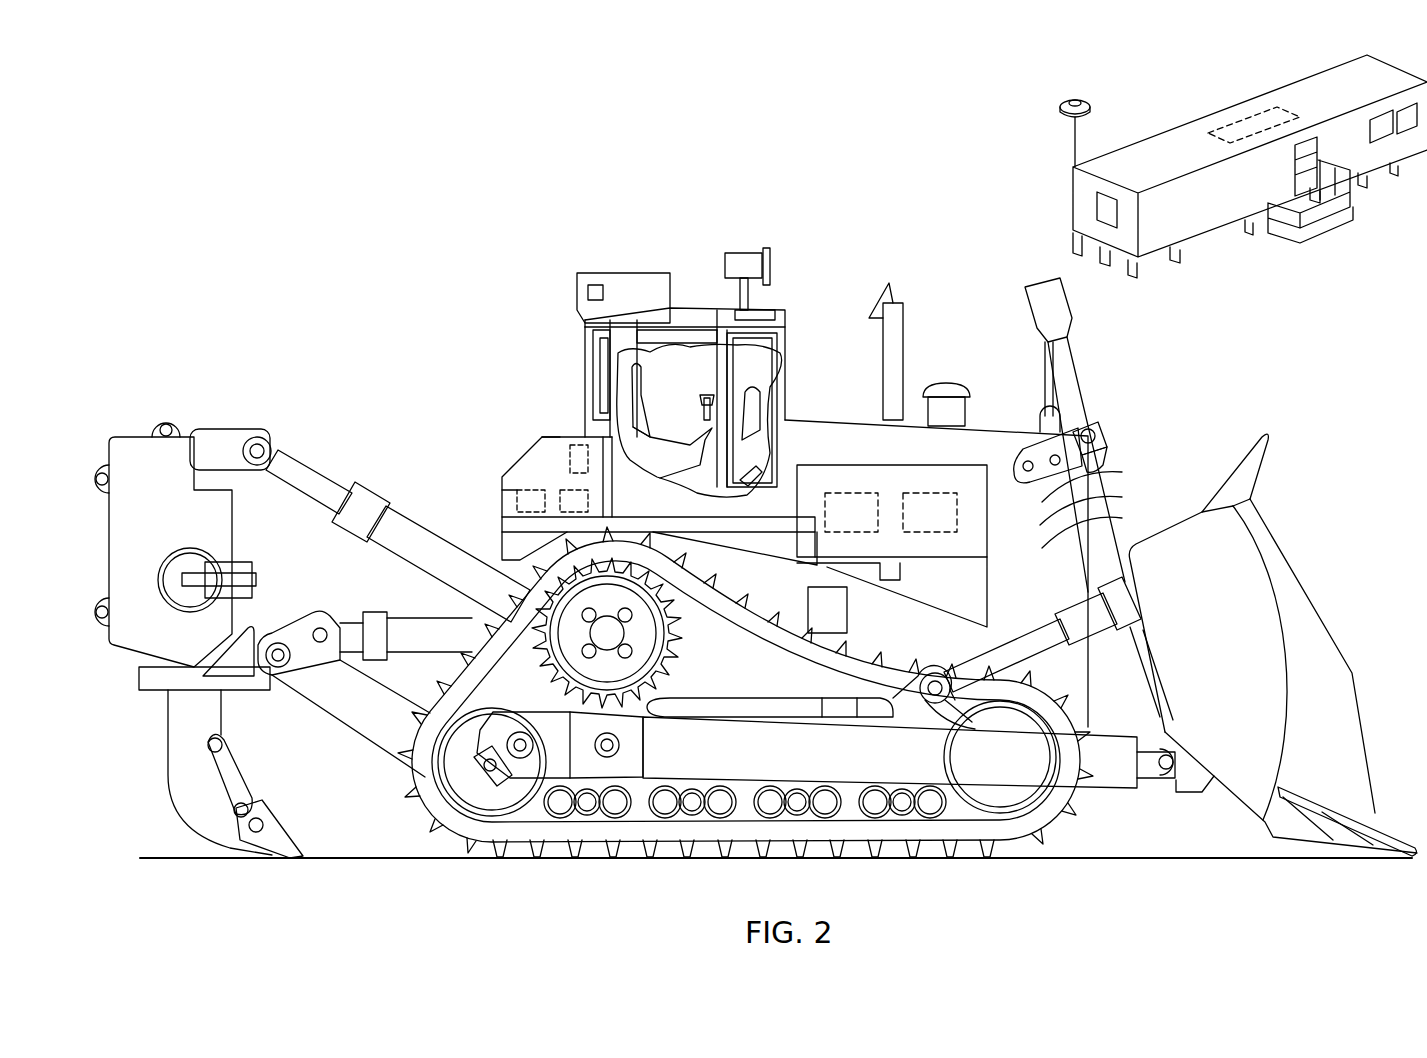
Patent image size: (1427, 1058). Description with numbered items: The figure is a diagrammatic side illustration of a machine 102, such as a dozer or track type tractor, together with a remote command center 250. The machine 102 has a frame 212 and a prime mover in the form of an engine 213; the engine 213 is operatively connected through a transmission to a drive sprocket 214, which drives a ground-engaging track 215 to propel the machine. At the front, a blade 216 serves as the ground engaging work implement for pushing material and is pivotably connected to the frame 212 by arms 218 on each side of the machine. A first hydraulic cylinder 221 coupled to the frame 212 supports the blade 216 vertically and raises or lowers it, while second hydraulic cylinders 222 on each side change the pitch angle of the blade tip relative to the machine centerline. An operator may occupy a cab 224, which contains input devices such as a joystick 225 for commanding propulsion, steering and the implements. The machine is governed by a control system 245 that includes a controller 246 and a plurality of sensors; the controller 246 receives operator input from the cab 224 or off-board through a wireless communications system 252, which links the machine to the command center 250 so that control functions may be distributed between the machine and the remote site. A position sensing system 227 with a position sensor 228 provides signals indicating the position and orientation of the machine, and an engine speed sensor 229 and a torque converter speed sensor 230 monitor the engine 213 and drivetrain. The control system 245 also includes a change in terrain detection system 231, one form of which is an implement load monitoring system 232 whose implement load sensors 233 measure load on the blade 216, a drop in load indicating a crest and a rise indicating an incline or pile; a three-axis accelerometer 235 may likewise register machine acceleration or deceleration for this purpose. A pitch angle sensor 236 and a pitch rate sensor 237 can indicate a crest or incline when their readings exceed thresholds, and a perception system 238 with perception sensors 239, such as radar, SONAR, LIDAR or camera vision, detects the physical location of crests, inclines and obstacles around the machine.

The machine 102 is at (330, 252).
The frame 212 is at (515, 537).
The engine 213 is at (980, 418).
The drive sprocket 214 is at (652, 645).
The track 215 is at (563, 832).
The blade 216 is at (1305, 632).
The arms 218 is at (1097, 762).
The first hydraulic cylinder 221 is at (1070, 345).
The second hydraulic cylinders 222 is at (1096, 622).
The cab 224 is at (665, 335).
The joystick 225 is at (706, 405).
The position sensing system 227 is at (585, 340).
The position sensor 228 is at (578, 445).
The engine speed sensor 229 is at (927, 533).
The torque converter speed sensor 230 is at (852, 492).
The change in terrain detection system 231 is at (1120, 518).
The implement load monitoring system 232 is at (1120, 497).
The implement load sensors 233 is at (1120, 472).
The three-axis accelerometer 235 is at (516, 497).
The pitch angle sensor 236 is at (558, 436).
The pitch rate sensor 237 is at (545, 440).
The perception system 238 is at (697, 303).
The perception sensors 239 is at (745, 250).
The control system 245 is at (517, 490).
The controller 246 is at (560, 489).
The command center 250 is at (1252, 120).
The wireless communications system 252 is at (1072, 100).